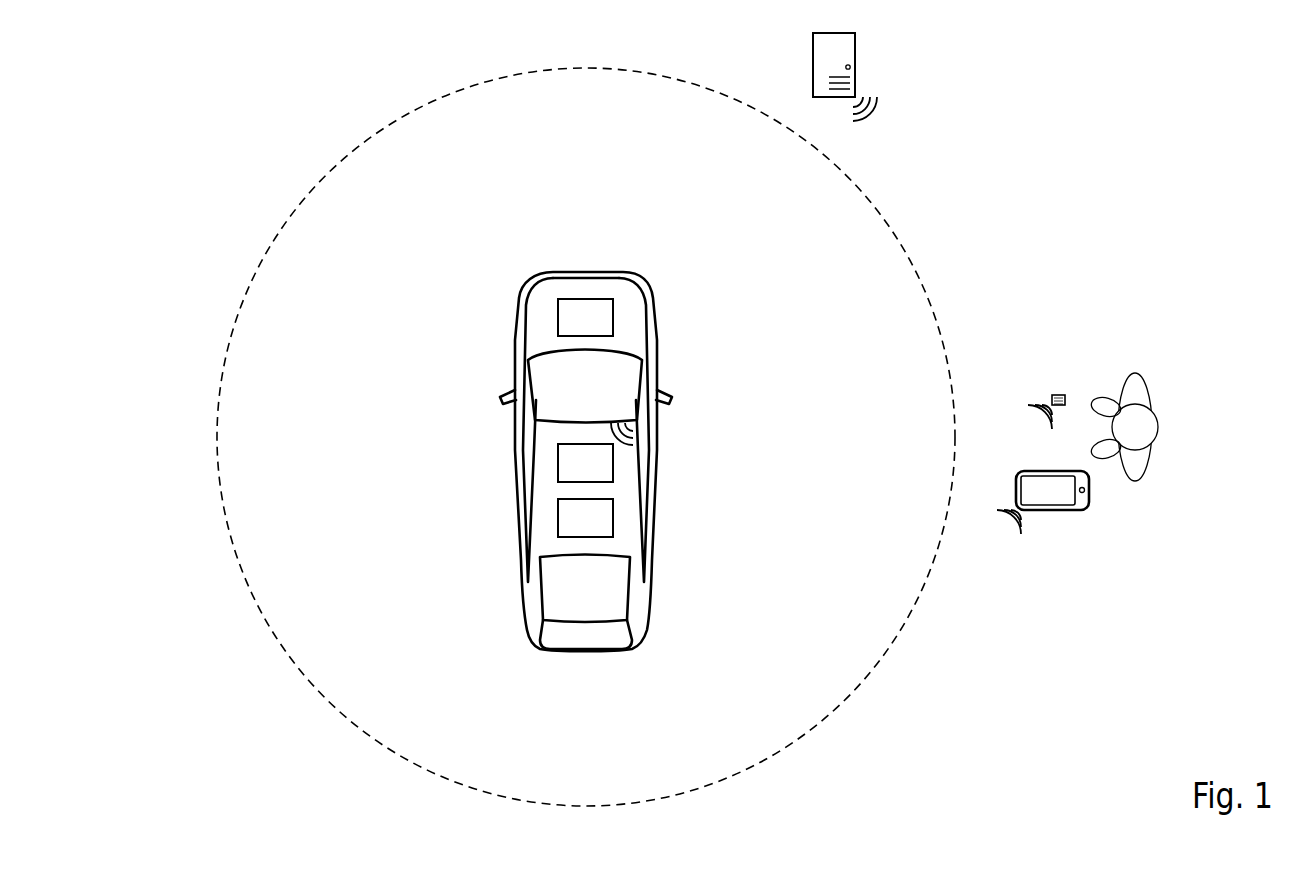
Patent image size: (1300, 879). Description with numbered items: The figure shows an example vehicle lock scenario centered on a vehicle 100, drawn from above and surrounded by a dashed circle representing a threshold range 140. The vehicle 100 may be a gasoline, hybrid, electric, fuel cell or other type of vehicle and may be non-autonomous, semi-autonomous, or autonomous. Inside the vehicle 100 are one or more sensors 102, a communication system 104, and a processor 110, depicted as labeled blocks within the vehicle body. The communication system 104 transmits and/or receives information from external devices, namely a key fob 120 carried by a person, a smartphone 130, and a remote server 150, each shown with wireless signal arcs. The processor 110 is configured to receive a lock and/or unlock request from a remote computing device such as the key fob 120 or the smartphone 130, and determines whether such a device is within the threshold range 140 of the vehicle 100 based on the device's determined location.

The vehicle 100 is at (513, 353).
The sensors 102 is at (585, 317).
The communication system 104 is at (585, 463).
The processor 110 is at (585, 518).
The key fob 120 is at (1053, 395).
The smartphone 130 is at (1060, 510).
The threshold range 140 is at (872, 673).
The server 150 is at (847, 53).